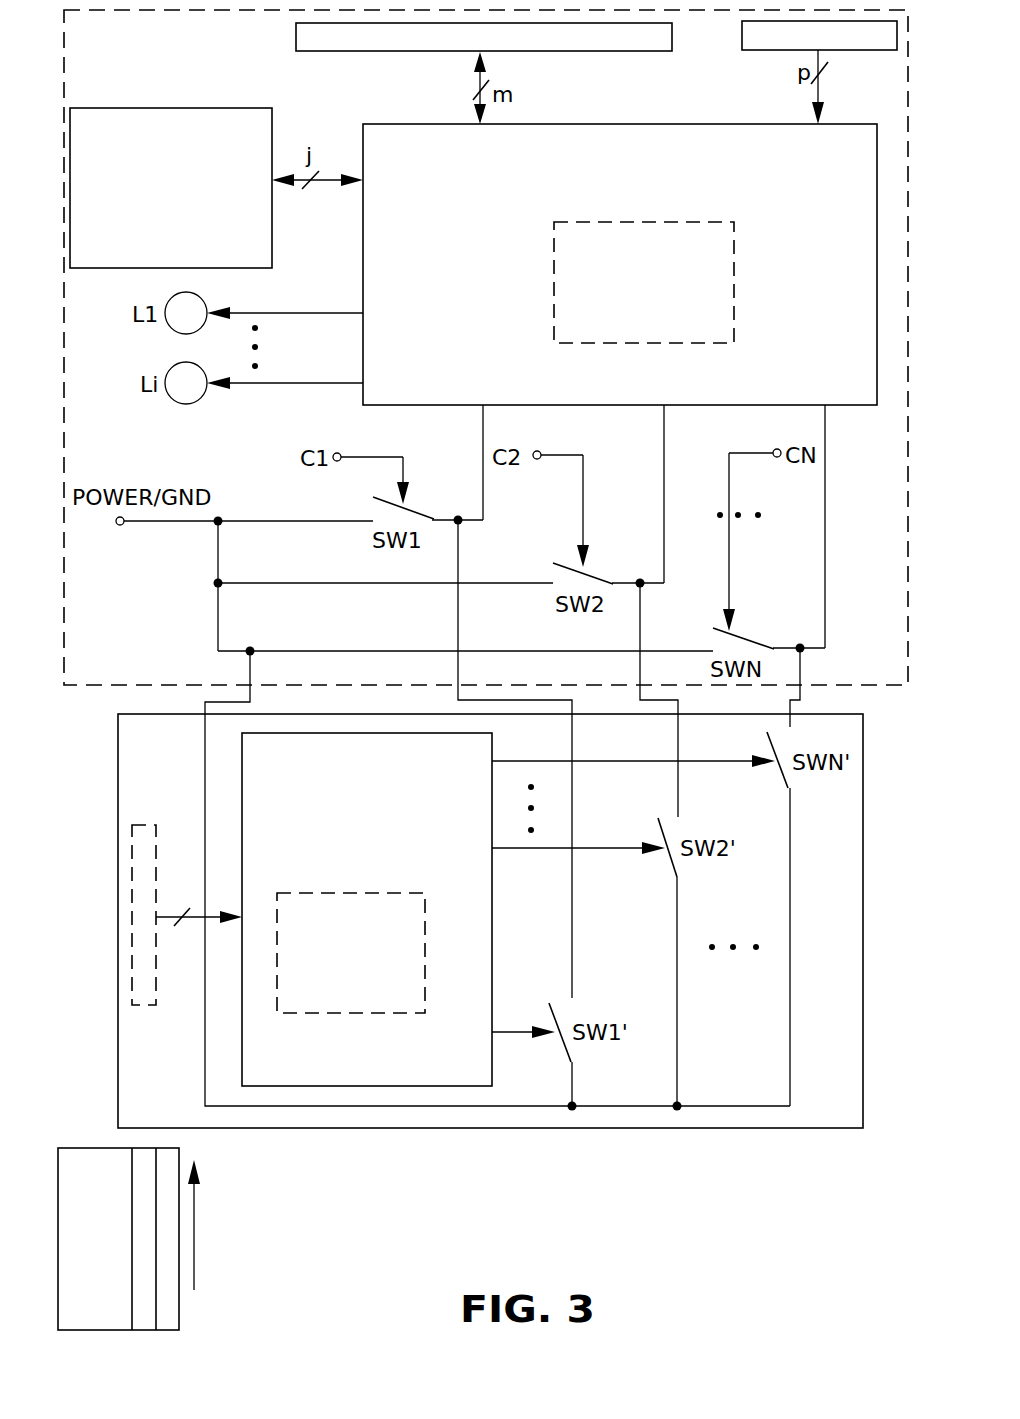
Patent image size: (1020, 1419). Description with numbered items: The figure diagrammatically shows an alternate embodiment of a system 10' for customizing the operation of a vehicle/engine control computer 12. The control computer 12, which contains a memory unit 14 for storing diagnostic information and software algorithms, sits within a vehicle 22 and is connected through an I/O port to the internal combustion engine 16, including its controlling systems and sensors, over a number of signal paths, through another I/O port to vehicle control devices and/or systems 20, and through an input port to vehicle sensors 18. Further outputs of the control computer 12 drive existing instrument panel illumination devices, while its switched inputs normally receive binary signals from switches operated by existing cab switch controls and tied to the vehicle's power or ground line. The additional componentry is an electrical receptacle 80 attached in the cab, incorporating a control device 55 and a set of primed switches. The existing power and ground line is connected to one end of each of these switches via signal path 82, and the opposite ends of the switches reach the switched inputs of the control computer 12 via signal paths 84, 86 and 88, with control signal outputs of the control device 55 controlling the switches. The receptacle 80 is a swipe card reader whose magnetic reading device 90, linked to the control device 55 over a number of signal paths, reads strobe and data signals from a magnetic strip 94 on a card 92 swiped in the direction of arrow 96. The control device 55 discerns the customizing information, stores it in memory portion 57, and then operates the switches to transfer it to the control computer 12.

The system for customizing vehicle/engine control computer operation 10' is at (837, 1240).
The vehicle/engine control computer 12 is at (850, 405).
The memory unit 14 is at (735, 290).
The internal combustion engine 16 is at (272, 137).
The sensors 18 is at (742, 40).
The vehicle control devices and/or systems 20 is at (296, 38).
The vehicle 22 is at (907, 687).
The control device 55 is at (492, 920).
The memory portion 57 is at (296, 893).
The electrical receptacle 80 is at (758, 1128).
The signal path 82 is at (251, 683).
The signal path 84 is at (573, 748).
The signal path 86 is at (679, 800).
The signal path 88 is at (791, 722).
The magnetic reading device 90 is at (145, 825).
The card 92 is at (179, 1322).
The magnetic strip 94 is at (132, 1235).
The arrow 96 is at (196, 1220).